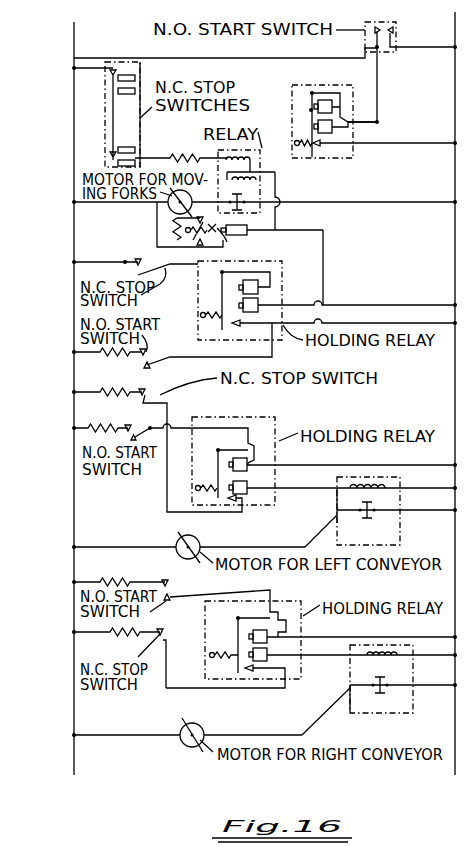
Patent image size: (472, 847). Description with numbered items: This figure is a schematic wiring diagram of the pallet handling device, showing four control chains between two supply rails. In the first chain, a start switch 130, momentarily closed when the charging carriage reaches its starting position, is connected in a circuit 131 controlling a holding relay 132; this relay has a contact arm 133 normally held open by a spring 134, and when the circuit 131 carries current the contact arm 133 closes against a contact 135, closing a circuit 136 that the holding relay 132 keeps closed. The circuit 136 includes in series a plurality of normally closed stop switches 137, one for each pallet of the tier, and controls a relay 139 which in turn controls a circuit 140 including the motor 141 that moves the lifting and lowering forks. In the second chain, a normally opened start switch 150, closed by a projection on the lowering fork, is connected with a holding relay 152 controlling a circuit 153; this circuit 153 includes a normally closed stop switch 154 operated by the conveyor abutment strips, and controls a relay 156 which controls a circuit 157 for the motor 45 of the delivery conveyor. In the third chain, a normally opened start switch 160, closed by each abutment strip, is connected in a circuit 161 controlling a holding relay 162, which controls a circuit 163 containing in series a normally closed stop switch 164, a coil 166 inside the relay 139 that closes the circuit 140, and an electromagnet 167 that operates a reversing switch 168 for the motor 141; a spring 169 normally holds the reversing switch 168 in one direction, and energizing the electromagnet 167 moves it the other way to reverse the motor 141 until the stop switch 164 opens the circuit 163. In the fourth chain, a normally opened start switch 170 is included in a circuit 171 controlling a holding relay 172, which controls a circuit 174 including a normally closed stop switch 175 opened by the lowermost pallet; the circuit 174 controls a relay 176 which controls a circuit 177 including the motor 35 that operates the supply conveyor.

The start switch 130 is at (398, 38).
The circuit 131 is at (381, 73).
The holding relay 132 is at (317, 110).
The contact arm 133 is at (309, 110).
The spring 134 is at (302, 140).
The contact 135 is at (315, 160).
The circuit 136 is at (389, 132).
The normally closed stop switches 137 is at (105, 152).
The relay 139 is at (253, 181).
The circuit 140 is at (358, 203).
The motor 141 is at (168, 207).
The normally closed stop switch 164 is at (133, 262).
The coil 166 is at (228, 180).
The electromagnet 167 is at (262, 232).
The reversing switch 168 is at (230, 240).
The spring 169 is at (217, 238).
The circuit 163 is at (326, 253).
The holding relay 162 is at (278, 290).
The circuit 161 is at (357, 304).
The normally opened start switch 160 is at (157, 355).
The normally closed stop switch 154 is at (143, 392).
The holding relay 152 is at (235, 416).
The circuit 153 is at (326, 492).
The normally opened start switch 150 is at (124, 424).
The relay 156 is at (402, 533).
The circuit 157 is at (130, 546).
The motor 45 is at (198, 534).
The normally opened start switch 170 is at (172, 590).
The normally closed stop switch 175 is at (153, 628).
The holding relay 172 is at (285, 600).
The circuit 171 is at (327, 637).
The circuit 174 is at (224, 688).
The relay 176 is at (388, 715).
The circuit 177 is at (320, 713).
The motor 35 is at (182, 745).